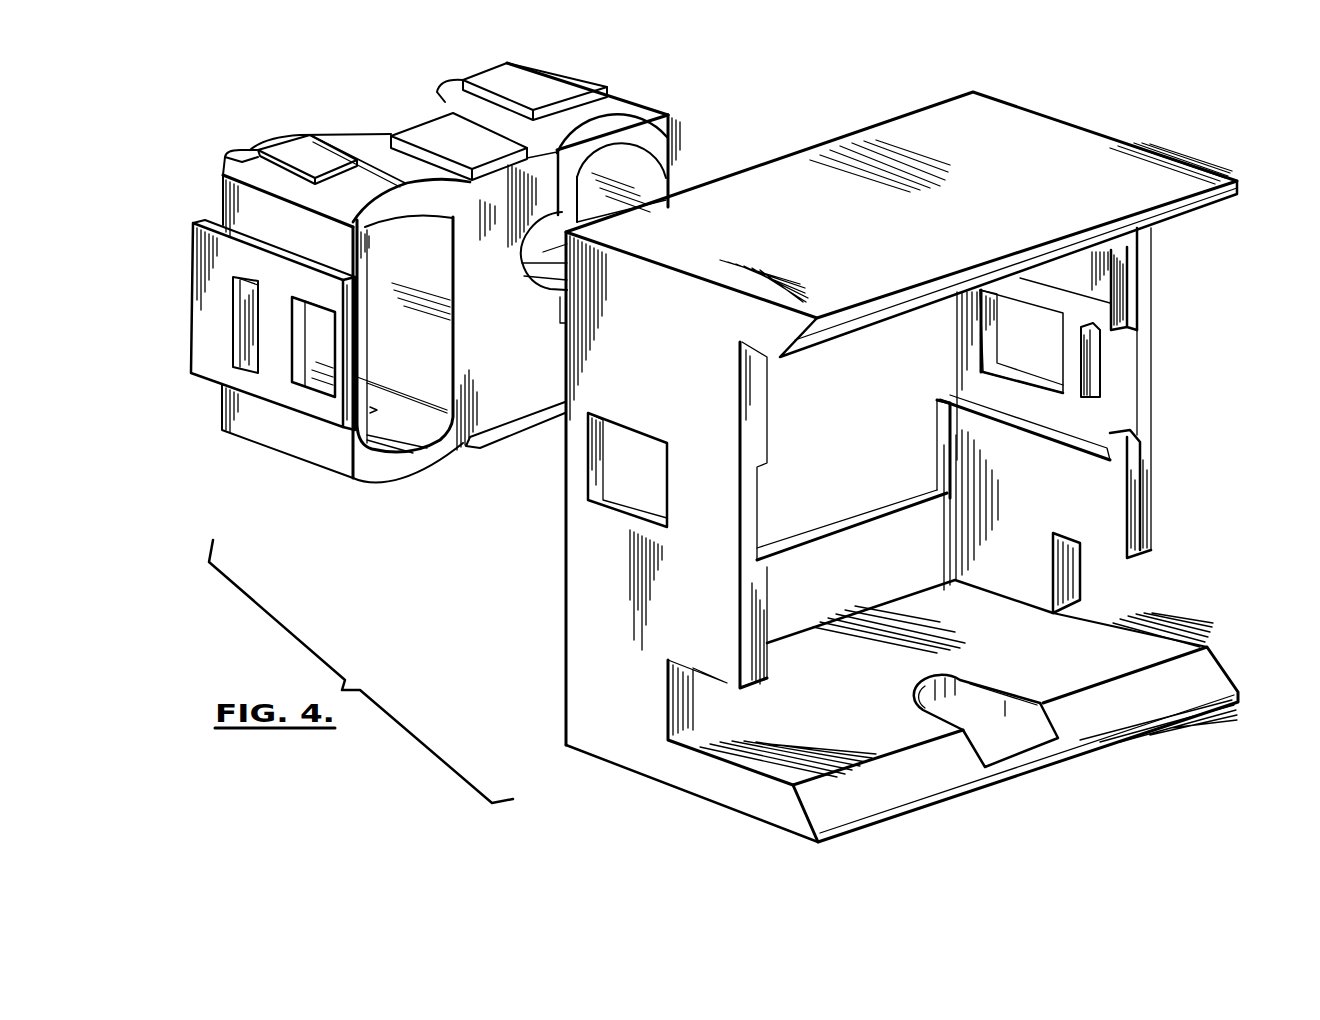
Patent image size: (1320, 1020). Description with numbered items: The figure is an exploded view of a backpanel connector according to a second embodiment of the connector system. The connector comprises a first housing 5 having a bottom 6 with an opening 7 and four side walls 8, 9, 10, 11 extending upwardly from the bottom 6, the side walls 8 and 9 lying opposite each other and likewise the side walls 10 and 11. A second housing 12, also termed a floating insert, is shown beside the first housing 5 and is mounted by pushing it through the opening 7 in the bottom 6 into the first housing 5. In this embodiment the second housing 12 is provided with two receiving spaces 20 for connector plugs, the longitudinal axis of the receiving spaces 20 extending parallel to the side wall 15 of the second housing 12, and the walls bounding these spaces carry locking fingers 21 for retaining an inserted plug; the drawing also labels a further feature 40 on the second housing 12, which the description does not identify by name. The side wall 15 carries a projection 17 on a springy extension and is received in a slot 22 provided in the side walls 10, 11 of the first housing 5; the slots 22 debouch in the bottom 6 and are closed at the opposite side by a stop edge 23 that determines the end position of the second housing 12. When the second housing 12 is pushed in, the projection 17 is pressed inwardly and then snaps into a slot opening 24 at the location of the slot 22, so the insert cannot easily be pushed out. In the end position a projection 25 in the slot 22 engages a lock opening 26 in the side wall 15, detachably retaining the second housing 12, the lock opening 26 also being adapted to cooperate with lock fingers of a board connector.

The first housing 5 is at (1145, 128).
The bottom 6 is at (910, 610).
The opening 7 is at (853, 480).
The side wall 8 is at (1185, 175).
The side wall 9 is at (1200, 665).
The side wall 10 is at (578, 645).
The side wall 11 is at (1145, 265).
The second housing 12 is at (612, 80).
The side wall 15 is at (216, 357).
The projection 17 is at (246, 378).
The receiving space 20 is at (390, 428).
The locking finger 21 is at (295, 152).
The slot 22 is at (750, 507).
The stop edge 23 is at (1132, 320).
The slot opening 24 is at (625, 475).
The projection 25 is at (1094, 374).
The lock opening 26 is at (330, 378).
The latch rib 40 is at (433, 135).